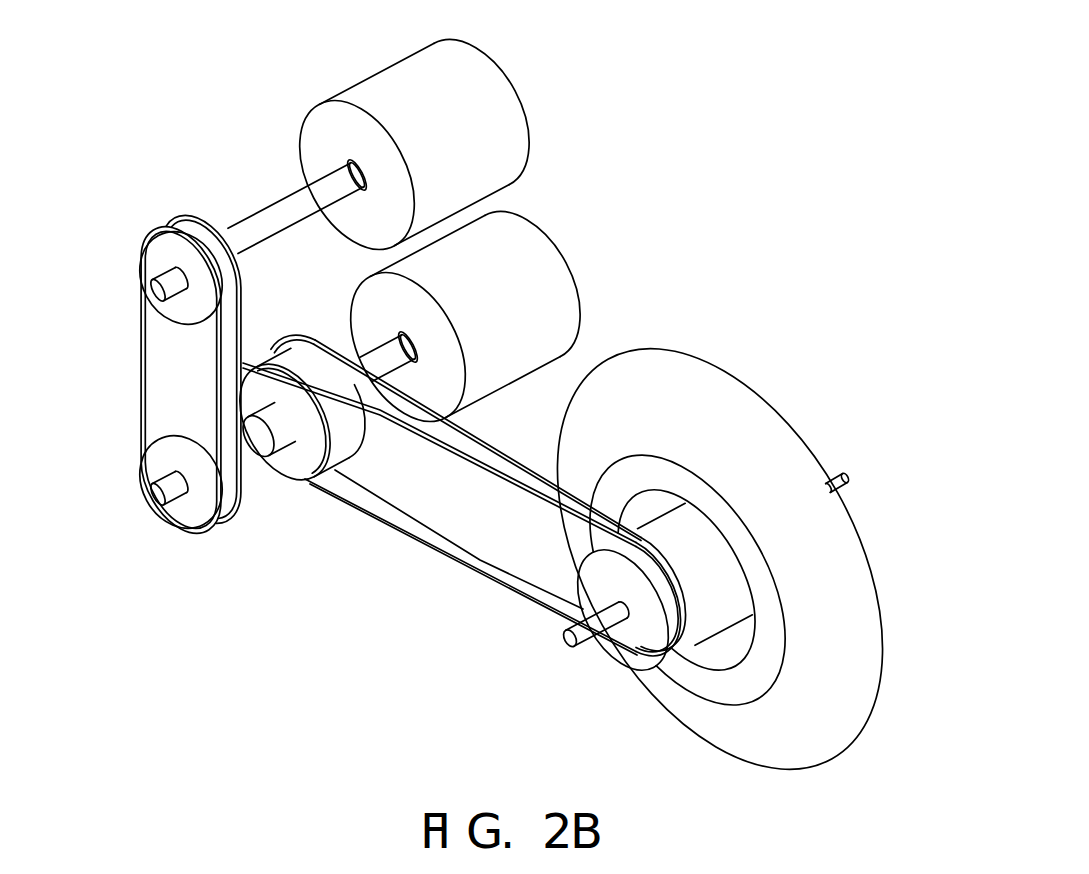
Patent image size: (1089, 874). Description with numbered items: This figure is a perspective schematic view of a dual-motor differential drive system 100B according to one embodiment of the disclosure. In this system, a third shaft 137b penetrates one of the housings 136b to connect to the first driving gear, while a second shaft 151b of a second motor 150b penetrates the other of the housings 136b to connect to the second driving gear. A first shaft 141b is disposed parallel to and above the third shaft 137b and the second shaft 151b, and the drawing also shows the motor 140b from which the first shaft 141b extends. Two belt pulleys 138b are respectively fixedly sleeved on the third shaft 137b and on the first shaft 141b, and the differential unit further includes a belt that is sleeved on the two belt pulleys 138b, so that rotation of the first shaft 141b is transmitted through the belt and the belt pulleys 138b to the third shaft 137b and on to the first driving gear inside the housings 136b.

The first motor 140b is at (462, 65).
The first shaft 141b is at (275, 213).
The second motor 150b is at (513, 240).
The second shaft 151b is at (387, 357).
The belt pulleys 138b is at (182, 310).
The third shaft 137b is at (150, 491).
The housings 136b is at (287, 457).
The dual-motor differential drive system 100B is at (1067, 770).